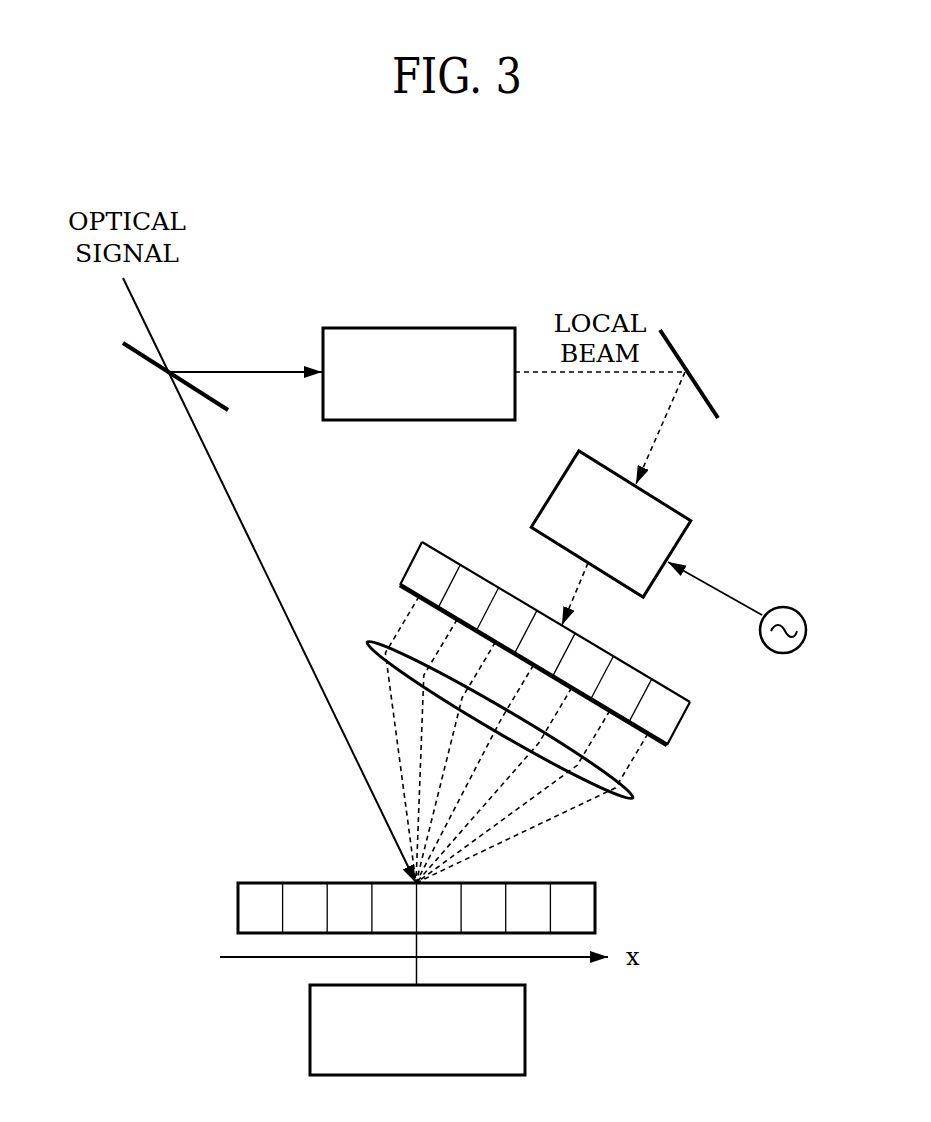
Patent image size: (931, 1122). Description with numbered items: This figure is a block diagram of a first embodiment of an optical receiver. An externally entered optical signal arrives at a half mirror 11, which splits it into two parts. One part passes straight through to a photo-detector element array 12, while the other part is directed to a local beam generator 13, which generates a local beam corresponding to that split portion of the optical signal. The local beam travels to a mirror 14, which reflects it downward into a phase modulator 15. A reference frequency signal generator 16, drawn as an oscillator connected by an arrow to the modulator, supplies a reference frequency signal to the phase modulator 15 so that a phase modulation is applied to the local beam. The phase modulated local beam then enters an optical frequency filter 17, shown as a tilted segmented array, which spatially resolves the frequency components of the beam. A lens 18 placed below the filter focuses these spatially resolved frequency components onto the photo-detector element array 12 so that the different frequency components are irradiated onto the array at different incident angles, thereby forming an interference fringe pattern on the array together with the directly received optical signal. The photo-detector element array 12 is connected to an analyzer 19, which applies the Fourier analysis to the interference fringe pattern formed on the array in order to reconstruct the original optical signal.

The half mirror 11 is at (147, 360).
The photo-detector element array 12 is at (248, 883).
The local beam generator 13 is at (452, 327).
The mirror 14 is at (670, 343).
The phase modulator 15 is at (680, 512).
The reference frequency signal generator 16 is at (797, 607).
The optical frequency filter 17 is at (682, 723).
The lens 18 is at (635, 800).
The analyzer 19 is at (525, 1057).